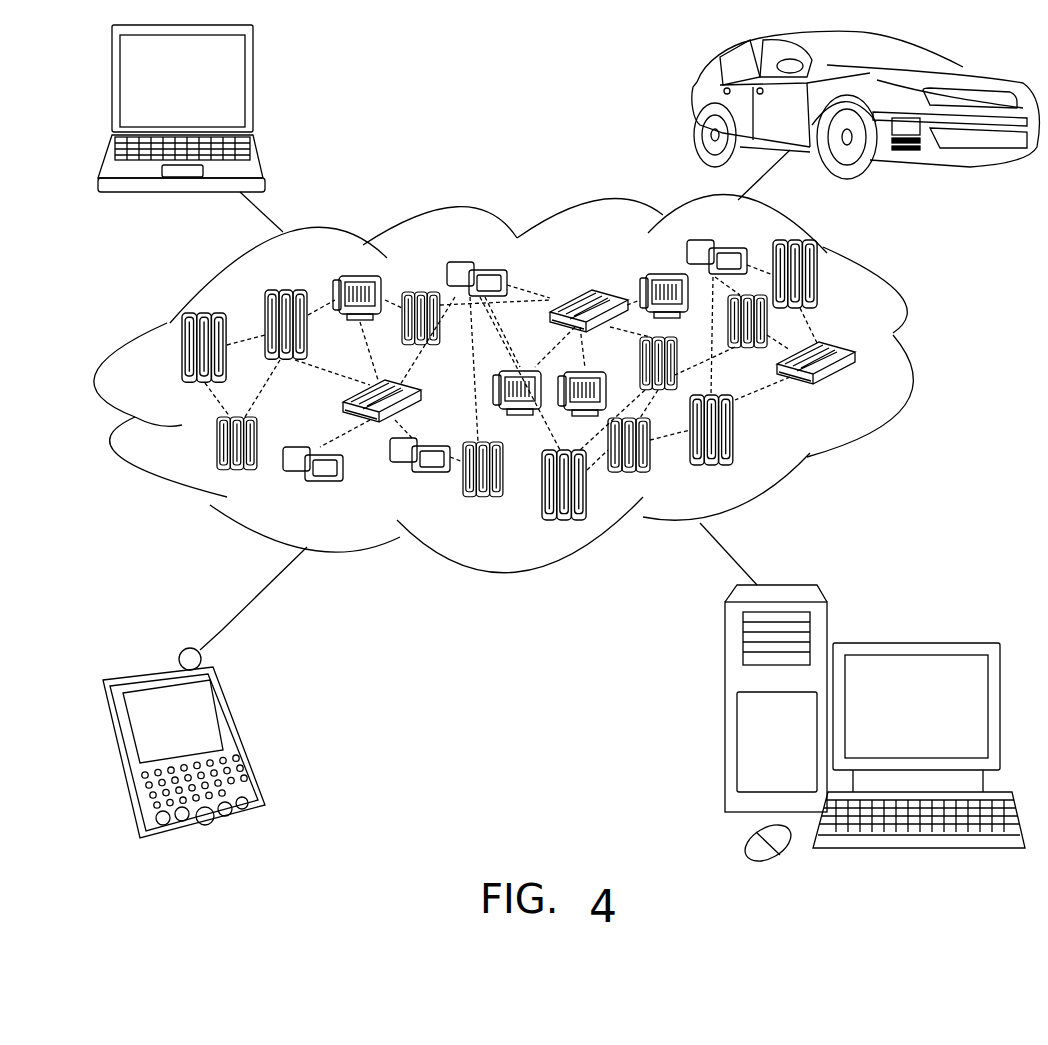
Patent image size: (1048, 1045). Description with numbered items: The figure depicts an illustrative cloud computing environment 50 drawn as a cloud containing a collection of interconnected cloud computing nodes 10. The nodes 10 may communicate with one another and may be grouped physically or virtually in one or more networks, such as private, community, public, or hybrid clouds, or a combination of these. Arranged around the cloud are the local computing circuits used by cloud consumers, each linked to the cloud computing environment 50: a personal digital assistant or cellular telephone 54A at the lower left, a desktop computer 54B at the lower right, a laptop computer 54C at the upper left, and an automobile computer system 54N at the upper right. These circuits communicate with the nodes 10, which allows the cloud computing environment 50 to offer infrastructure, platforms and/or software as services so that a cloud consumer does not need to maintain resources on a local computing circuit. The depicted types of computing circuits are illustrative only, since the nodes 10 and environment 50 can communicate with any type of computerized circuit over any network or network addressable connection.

The cloud computing environment 50 is at (534, 383).
The cloud computing node 10 is at (862, 389).
The personal digital assistant or cellular telephone 54A is at (243, 737).
The desktop computer 54B is at (915, 642).
The laptop computer 54C is at (252, 88).
The automobile computer system 54N is at (693, 102).